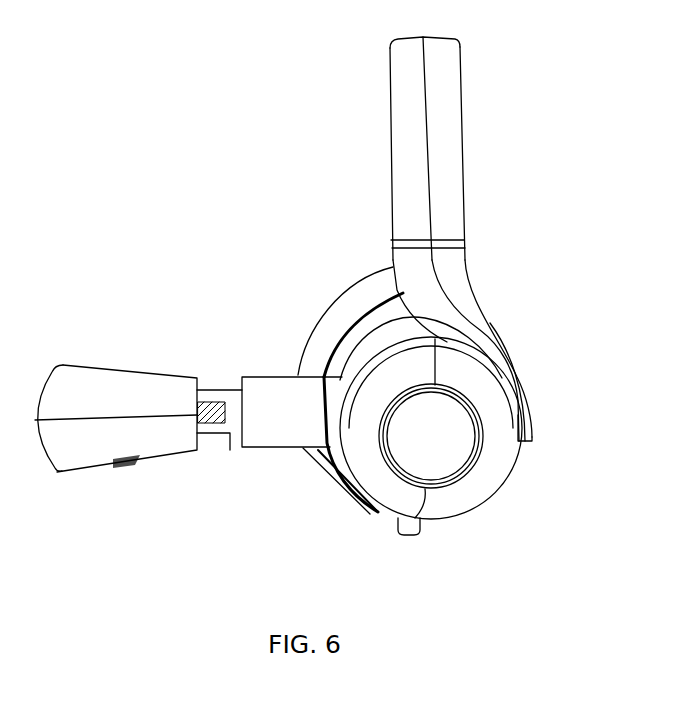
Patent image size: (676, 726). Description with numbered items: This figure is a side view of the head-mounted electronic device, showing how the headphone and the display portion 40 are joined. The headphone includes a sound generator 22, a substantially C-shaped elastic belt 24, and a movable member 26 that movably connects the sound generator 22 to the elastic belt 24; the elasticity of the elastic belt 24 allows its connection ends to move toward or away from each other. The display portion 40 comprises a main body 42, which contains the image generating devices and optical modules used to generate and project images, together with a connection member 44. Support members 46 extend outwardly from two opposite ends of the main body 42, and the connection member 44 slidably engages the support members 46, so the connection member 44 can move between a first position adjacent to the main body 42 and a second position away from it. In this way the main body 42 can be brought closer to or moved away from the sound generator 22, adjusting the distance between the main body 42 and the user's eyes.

The sound generator 22 is at (457, 450).
The elastic belt 24 is at (436, 155).
The movable member 26 is at (460, 320).
The display portion 40 is at (188, 430).
The main body 42 is at (70, 388).
The connection member 44 is at (278, 388).
The support member 46 is at (227, 432).